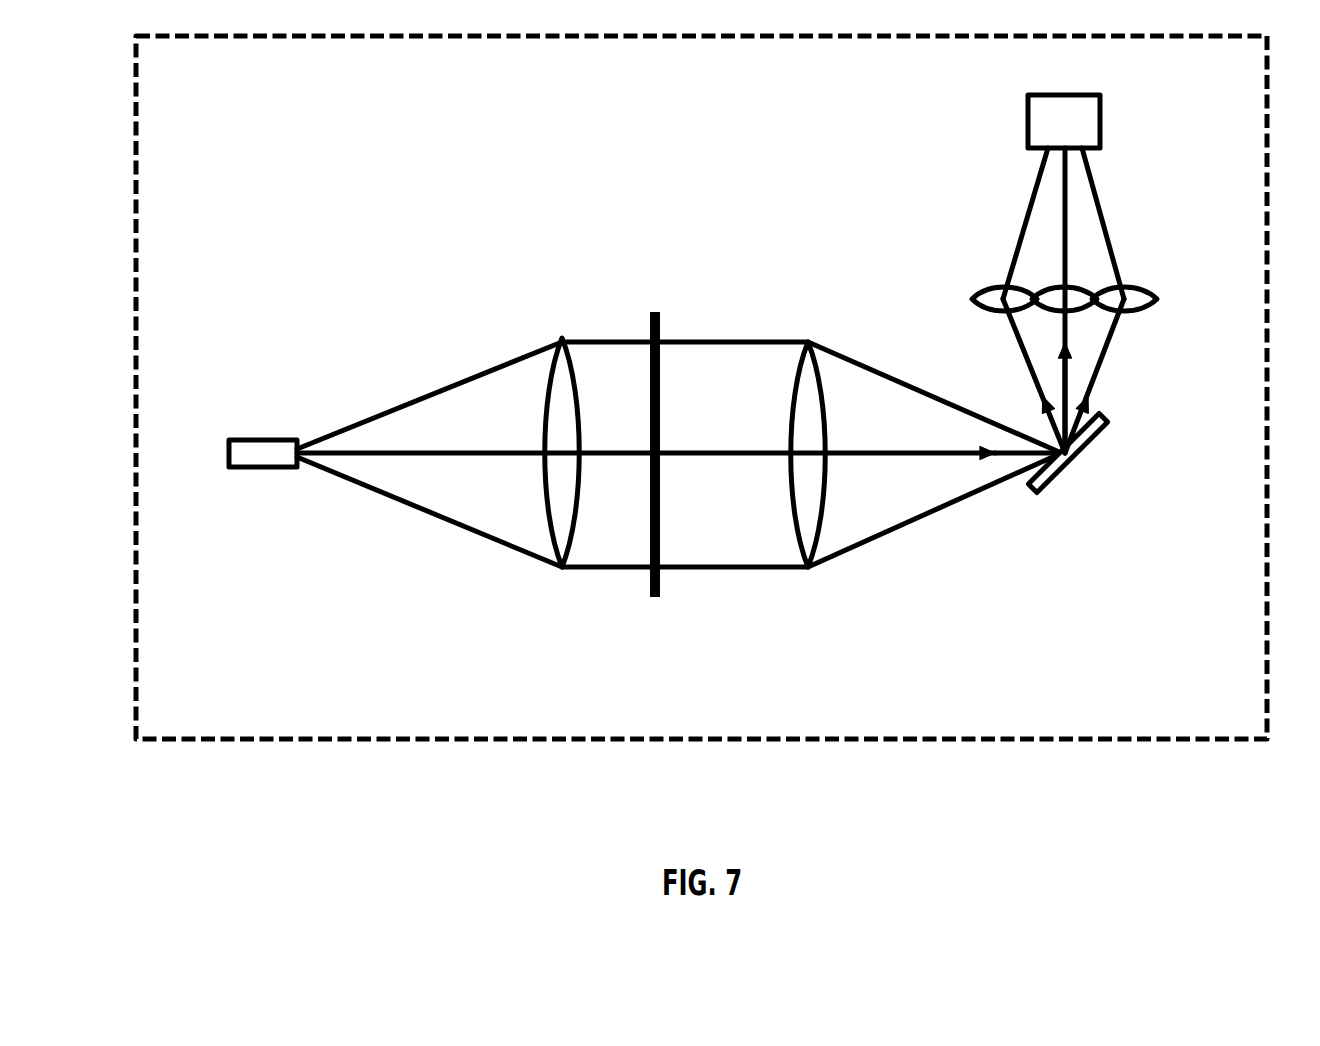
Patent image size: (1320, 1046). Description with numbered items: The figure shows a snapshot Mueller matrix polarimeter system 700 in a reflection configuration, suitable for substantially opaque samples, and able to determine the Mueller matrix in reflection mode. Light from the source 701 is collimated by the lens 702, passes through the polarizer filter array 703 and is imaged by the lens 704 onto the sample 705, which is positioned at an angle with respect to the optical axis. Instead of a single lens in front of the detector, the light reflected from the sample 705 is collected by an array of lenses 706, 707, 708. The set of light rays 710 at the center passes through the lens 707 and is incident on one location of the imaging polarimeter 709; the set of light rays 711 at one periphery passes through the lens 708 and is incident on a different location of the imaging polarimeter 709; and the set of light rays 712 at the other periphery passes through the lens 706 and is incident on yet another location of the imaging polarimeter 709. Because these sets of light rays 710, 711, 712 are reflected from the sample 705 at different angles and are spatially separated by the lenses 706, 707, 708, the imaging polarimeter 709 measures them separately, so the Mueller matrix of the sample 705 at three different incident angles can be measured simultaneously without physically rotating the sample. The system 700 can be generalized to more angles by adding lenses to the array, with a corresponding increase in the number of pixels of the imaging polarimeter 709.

The system 700 is at (701, 419).
The source 701 is at (256, 467).
The lens 702 is at (570, 538).
The polarizer filter array 703 is at (660, 583).
The lens 704 is at (825, 396).
The sample 705 is at (1050, 480).
The lens 706 is at (1157, 299).
The lens 707 is at (1045, 313).
The lens 708 is at (973, 298).
The imaging polarimeter 709 is at (1100, 135).
The set of light rays 710 is at (1100, 422).
The set of light rays 711 is at (1037, 397).
The set of light rays 712 is at (1110, 342).